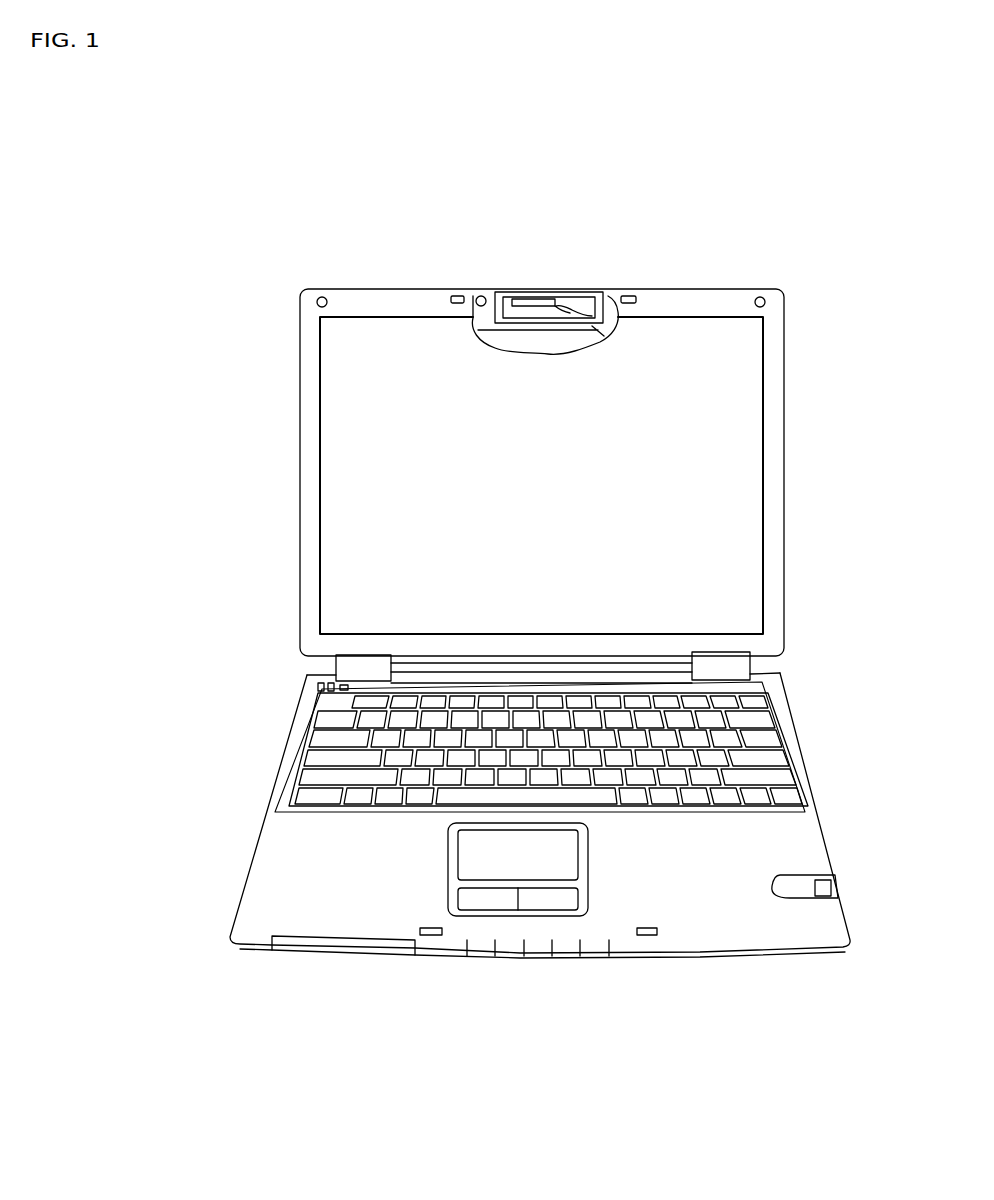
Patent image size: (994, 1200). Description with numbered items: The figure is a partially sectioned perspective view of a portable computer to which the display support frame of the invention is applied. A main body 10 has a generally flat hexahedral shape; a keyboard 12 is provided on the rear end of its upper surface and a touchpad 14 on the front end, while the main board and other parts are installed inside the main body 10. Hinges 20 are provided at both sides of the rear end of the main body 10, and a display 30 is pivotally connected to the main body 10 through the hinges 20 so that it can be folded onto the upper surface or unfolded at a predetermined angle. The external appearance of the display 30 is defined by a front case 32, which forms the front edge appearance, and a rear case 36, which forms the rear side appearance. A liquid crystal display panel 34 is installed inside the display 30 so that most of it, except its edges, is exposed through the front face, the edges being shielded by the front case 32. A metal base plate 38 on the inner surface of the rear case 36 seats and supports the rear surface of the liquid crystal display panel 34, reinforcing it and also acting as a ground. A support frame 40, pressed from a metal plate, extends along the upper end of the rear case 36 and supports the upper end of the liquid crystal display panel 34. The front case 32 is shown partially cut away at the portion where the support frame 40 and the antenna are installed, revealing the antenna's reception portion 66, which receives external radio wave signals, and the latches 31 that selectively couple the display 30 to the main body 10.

The main body 10 is at (715, 917).
The keyboard 12 is at (725, 775).
The touchpad 14 is at (495, 855).
The hinges 20 is at (360, 668).
The display 30 is at (496, 426).
The latches 31 is at (452, 296).
The front case 32 is at (773, 538).
The liquid crystal display panel 34 is at (735, 472).
The rear case 36 is at (485, 297).
The base plate 38 is at (522, 338).
The support frame 40 is at (600, 310).
The reception portion 66 is at (542, 302).